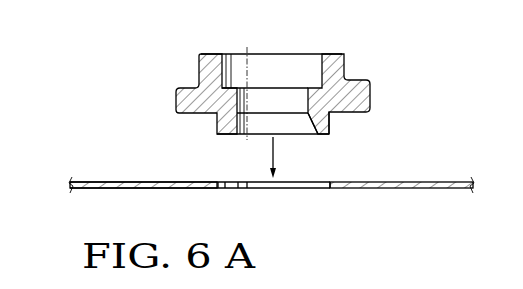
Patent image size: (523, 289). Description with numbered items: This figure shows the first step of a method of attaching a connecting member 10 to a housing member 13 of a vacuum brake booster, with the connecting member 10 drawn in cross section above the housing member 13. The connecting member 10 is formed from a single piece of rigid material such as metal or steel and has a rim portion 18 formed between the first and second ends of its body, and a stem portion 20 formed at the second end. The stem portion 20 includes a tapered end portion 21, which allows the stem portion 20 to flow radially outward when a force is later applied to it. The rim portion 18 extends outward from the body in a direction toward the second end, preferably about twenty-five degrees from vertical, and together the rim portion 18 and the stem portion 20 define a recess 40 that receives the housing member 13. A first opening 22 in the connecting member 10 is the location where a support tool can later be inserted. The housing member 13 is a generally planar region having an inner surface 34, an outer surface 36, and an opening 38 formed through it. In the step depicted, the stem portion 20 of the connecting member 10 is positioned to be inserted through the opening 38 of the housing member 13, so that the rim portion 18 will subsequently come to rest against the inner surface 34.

The connecting member 10 is at (176, 60).
The first opening 22 is at (261, 60).
The rim portion 18 is at (370, 100).
The stem portion 20 is at (218, 128).
The recess 40 is at (332, 108).
The tapered end portion 21 is at (318, 130).
The housing member 13 is at (390, 198).
The inner surface 34 is at (112, 181).
The outer surface 36 is at (127, 188).
The opening 38 is at (238, 188).